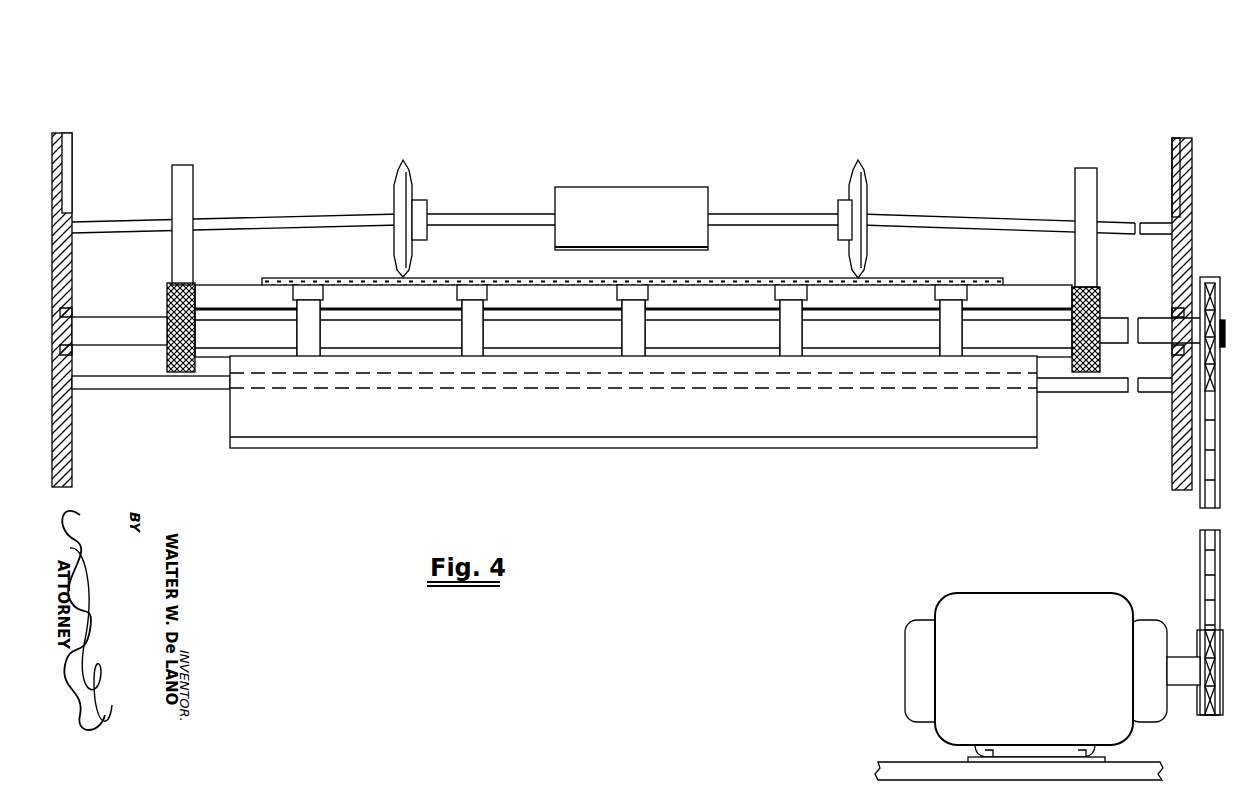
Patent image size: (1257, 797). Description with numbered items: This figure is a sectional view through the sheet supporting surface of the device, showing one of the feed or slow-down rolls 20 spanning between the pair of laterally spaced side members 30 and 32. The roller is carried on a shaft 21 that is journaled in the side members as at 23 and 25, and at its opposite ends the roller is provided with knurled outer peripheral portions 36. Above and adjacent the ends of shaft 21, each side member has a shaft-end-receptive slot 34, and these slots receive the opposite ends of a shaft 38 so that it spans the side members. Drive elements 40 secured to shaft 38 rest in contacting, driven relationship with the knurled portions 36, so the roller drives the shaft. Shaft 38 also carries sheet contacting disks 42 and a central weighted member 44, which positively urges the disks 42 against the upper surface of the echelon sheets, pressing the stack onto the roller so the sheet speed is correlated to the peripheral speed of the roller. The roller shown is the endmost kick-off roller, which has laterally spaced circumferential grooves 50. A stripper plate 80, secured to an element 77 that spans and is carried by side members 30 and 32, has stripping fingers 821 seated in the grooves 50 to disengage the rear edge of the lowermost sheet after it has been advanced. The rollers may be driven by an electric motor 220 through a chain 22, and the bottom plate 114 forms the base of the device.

The feed or slow-down roll 20 is at (214, 293).
The shaft 21 is at (116, 331).
The chain 22 is at (1200, 564).
The journal 23 is at (72, 318).
The journal 25 is at (1176, 346).
The side member 30 is at (1186, 136).
The side member 32 is at (60, 132).
The shaft-end-receptive slot 34 is at (72, 152).
The knurled outer peripheral portion 36 is at (167, 298).
The shaft 38 is at (100, 222).
The drive element 40 is at (188, 201).
The sheet contacting disk 42 is at (408, 188).
The central weighted member 44 is at (650, 196).
The circumferential groove 50 is at (306, 283).
The element 77 is at (113, 382).
The stripper plate 80 is at (242, 412).
The bottom plate 114 is at (902, 770).
The electric motor 220 is at (988, 600).
The stripping finger 821 is at (315, 331).